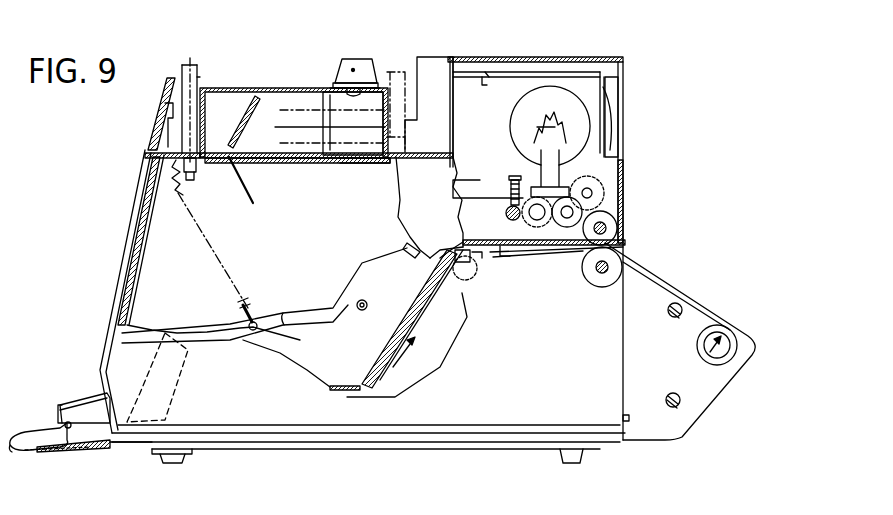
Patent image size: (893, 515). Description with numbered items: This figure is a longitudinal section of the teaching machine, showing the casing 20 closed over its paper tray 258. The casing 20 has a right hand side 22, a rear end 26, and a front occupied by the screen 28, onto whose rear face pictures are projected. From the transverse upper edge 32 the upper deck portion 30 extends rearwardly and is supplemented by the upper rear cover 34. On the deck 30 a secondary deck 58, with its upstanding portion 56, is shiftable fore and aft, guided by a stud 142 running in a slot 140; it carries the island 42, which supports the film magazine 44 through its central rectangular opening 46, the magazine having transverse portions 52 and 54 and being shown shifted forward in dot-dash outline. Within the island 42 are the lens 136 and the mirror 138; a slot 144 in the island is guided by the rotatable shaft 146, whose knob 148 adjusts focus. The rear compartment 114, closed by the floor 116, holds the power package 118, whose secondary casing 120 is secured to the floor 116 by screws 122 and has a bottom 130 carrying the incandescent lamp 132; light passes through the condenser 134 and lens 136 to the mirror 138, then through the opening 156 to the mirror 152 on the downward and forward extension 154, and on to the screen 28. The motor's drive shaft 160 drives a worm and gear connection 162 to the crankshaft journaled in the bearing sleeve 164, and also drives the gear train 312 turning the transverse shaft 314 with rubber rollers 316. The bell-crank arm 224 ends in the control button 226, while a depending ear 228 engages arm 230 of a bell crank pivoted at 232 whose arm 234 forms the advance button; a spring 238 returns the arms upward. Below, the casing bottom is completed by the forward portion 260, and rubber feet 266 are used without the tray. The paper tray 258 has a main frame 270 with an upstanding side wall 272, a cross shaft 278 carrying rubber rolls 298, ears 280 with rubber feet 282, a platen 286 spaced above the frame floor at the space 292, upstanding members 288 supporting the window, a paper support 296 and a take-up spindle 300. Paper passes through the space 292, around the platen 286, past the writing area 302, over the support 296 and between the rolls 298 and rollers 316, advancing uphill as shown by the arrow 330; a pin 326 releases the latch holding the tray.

The housing or casing 20 is at (418, 137).
The right hand side 22 is at (237, 403).
The rear end 26 is at (625, 70).
The screen 28 is at (140, 264).
The upper deck portion 30 is at (345, 164).
The transverse upper edge 32 is at (150, 152).
The upper rear cover 34 is at (585, 58).
The island 42 is at (235, 88).
The film magazine 44 is at (197, 66).
The central rectangular opening 46 is at (200, 77).
The transverse portion 52 is at (182, 66).
The transverse portion 54 is at (390, 72).
The upstanding portion 56 is at (165, 97).
The secondary deck 58 is at (322, 164).
The compartment 114 is at (487, 72).
The floor 116 is at (471, 253).
The power package 118 is at (535, 72).
The secondary casing or frame 120 is at (500, 80).
The screws 122 is at (482, 258).
The bottom 130 is at (498, 240).
The incandescent lamp 132 is at (538, 100).
The condenser 134 is at (462, 90).
The lens 136 is at (327, 100).
The mirror 138 is at (245, 136).
The slot 140 is at (212, 158).
The stud 142 is at (193, 165).
The slot 144 is at (330, 88).
The rotatable shaft 146 is at (349, 92).
The knob 148 is at (342, 62).
The mirror 152 is at (372, 356).
The downward and forward extension 154 is at (418, 300).
The opening 156 is at (297, 159).
The drive shaft 160 is at (507, 208).
The worm and gear connection 162 is at (520, 171).
The bearing sleeve 164 is at (460, 183).
The second arm 224 is at (262, 322).
The control button 226 is at (95, 396).
The depending ear 228 is at (408, 250).
The arm 230 is at (403, 258).
The pivot 232 is at (364, 304).
The arm 234 is at (300, 312).
The spring 238 is at (215, 253).
The paper tray 258 is at (413, 454).
The forward portion 260 is at (338, 391).
The rubber feet 266 is at (150, 443).
The main frame 270 is at (282, 446).
The upstanding side wall 272 is at (655, 262).
The cross shaft 278 is at (602, 274).
The ears 280 is at (192, 452).
The rubber feet 282 is at (178, 463).
The platen 286 is at (10, 450).
The upstanding members 288 is at (64, 404).
The space or opening 292 is at (100, 443).
The paper support 296 is at (467, 280).
The rubber rolls 298 is at (598, 272).
The take-up spindle 300 is at (725, 338).
The area 302 is at (45, 416).
The gear train 312 is at (505, 250).
The transverse shaft 314 is at (607, 228).
The rubber rollers 316 is at (602, 214).
The pin or stud 326 is at (630, 418).
The arrow 330 is at (405, 367).